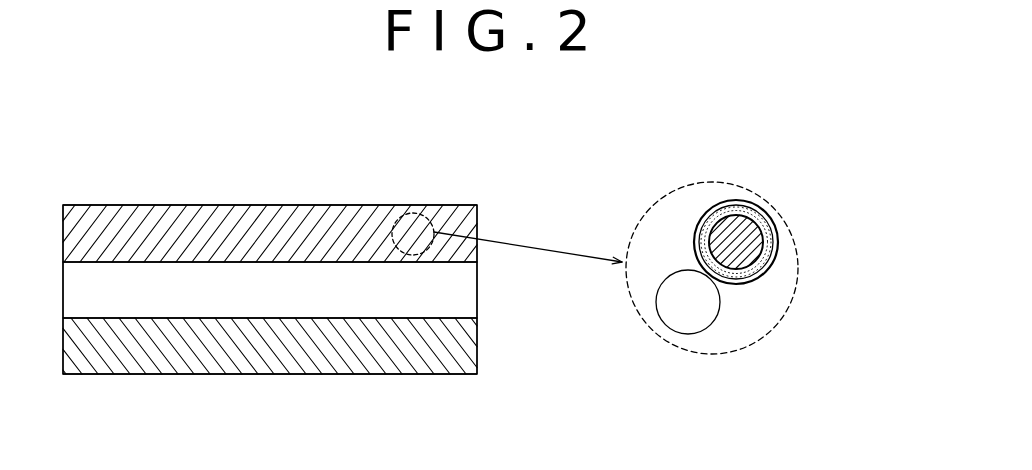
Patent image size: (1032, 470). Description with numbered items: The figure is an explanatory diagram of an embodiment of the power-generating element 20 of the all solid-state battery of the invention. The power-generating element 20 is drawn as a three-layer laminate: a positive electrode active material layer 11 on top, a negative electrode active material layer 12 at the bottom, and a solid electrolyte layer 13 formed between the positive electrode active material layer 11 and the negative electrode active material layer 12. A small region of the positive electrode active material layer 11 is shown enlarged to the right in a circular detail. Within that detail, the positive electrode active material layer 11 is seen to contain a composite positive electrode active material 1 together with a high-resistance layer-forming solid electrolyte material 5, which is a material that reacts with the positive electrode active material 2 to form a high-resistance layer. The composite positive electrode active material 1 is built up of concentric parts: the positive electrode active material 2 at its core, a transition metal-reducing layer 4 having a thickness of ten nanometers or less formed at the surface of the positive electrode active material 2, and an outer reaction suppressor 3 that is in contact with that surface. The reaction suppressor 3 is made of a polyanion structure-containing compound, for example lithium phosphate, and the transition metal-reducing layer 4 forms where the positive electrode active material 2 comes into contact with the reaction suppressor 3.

The power-generating element 20 is at (393, 172).
The positive electrode active material layer 11 is at (477, 223).
The solid electrolyte layer 13 is at (458, 290).
The negative electrode active material layer 12 is at (460, 343).
The composite positive electrode active material 1 is at (801, 245).
The reaction suppressor 3 is at (761, 208).
The positive electrode active material 2 is at (773, 231).
The transition metal-reducing layer 4 is at (754, 244).
The high-resistance layer-forming solid electrolyte material 5 is at (688, 318).